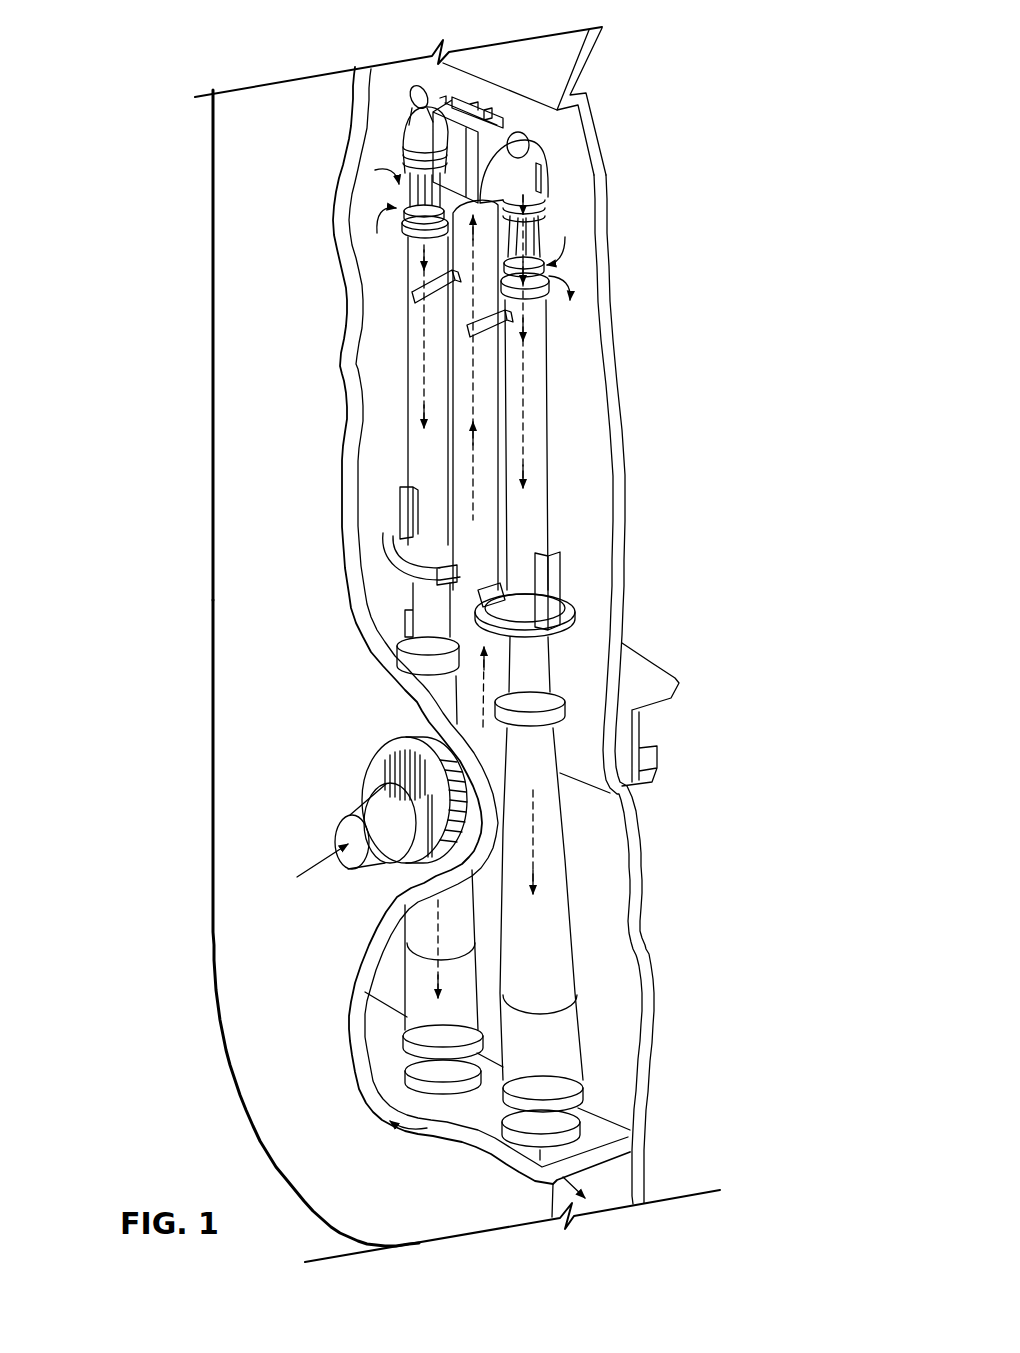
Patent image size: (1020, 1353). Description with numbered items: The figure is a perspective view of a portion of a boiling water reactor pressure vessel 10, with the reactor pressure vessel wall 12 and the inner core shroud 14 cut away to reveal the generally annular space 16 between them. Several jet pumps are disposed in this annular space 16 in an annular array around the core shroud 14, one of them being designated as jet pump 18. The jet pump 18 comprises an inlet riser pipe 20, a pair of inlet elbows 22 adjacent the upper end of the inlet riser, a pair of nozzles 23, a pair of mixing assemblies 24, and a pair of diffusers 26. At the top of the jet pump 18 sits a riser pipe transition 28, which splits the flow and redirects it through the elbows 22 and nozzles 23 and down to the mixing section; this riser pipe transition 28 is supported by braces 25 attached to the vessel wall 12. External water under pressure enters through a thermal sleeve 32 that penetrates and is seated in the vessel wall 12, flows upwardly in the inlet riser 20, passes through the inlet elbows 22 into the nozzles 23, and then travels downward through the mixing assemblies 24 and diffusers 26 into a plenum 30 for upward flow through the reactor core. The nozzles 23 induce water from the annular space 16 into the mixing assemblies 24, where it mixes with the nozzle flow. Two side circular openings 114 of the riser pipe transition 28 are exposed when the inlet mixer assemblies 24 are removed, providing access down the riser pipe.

The reactor pressure vessel 10 is at (178, 506).
The reactor pressure vessel wall 12 is at (235, 647).
The inner core shroud 14 is at (602, 557).
The annular space 16 is at (617, 1033).
The jet pump 18 is at (595, 458).
The inlet riser pipe 20 is at (492, 517).
The inlet elbows 22 is at (403, 133).
The nozzles 23 is at (528, 247).
The mixing assemblies 24 is at (538, 380).
The braces 25 is at (433, 337).
The diffusers 26 is at (557, 960).
The riser pipe transition 28 is at (480, 117).
The plenum 30 is at (600, 1187).
The thermal sleeve 32 is at (363, 793).
The side circular openings 114 is at (533, 147).